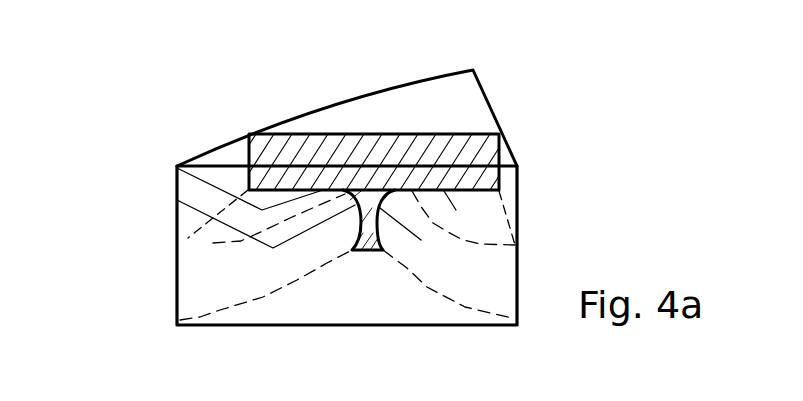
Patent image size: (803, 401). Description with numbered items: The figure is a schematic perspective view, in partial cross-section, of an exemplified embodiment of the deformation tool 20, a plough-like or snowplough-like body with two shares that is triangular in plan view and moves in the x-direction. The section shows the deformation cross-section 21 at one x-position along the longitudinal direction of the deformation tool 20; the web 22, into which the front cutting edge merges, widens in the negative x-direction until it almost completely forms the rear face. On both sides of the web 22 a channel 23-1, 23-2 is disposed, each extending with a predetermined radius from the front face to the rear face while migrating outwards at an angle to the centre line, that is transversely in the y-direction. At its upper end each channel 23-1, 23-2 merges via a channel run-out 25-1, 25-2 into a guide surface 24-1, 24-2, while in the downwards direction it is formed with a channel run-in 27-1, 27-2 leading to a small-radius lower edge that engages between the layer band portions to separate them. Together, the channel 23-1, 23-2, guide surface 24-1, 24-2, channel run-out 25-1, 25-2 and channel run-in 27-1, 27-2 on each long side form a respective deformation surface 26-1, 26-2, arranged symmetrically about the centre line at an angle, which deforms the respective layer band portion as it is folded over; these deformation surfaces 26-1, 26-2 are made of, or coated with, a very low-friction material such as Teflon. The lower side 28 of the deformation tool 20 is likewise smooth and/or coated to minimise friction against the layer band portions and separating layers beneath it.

The deformation tool 20 is at (378, 105).
The deformation cross-section 21 is at (313, 134).
The web 22 is at (356, 250).
The channel 23-1 is at (177, 200).
The channel 23-2 is at (421, 240).
The guide surface 24-1 is at (177, 168).
The guide surface 24-2 is at (456, 210).
The channel run-out 25-1 is at (215, 244).
The channel run-out 25-2 is at (441, 229).
The deformation surface 26-1 is at (232, 267).
The deformation surface 26-2 is at (458, 268).
The channel run-in 27-1 is at (260, 297).
The channel run-in 27-2 is at (445, 298).
The lower side 28 is at (255, 325).